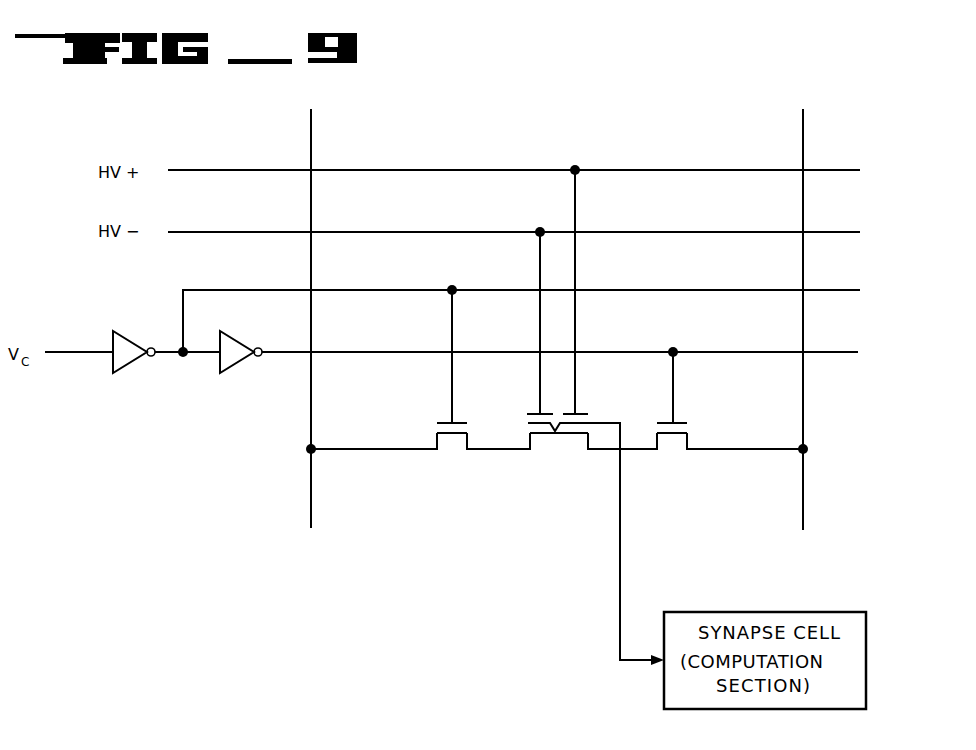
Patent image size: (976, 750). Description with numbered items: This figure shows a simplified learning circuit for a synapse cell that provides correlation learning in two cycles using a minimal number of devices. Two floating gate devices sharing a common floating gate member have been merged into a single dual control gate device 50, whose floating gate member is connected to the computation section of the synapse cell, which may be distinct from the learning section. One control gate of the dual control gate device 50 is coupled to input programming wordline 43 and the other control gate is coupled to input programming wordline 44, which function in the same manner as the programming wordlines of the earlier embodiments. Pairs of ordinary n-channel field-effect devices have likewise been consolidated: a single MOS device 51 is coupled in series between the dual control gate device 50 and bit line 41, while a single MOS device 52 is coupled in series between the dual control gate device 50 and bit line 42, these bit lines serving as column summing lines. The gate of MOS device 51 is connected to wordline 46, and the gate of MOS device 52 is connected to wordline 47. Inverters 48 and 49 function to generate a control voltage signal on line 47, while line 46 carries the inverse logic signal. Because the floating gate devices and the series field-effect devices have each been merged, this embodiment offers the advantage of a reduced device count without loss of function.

The bit line 41 is at (310, 500).
The bit line 42 is at (806, 494).
The input programming wordline 43 is at (652, 169).
The input programming wordline 44 is at (847, 231).
The wordline 46 is at (847, 289).
The wordline 47 is at (850, 351).
The inverter 48 is at (135, 362).
The inverter 49 is at (242, 362).
The dual control gate device 50 is at (560, 446).
The MOS device 51 is at (455, 446).
The MOS device 52 is at (675, 446).